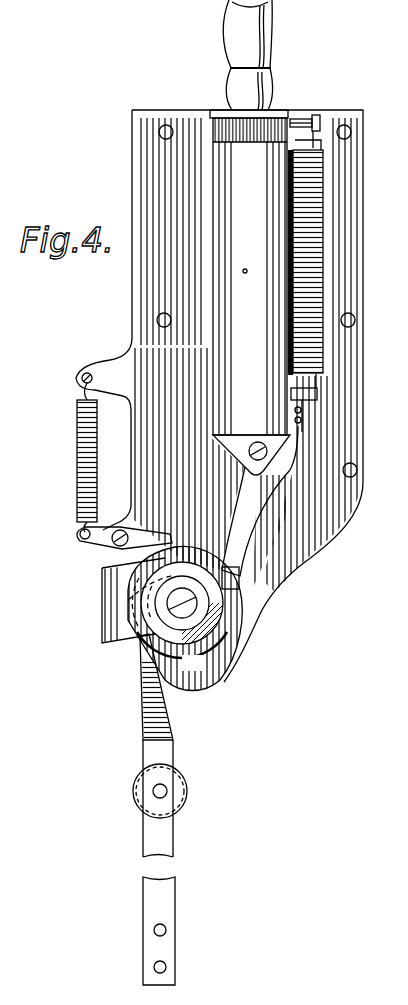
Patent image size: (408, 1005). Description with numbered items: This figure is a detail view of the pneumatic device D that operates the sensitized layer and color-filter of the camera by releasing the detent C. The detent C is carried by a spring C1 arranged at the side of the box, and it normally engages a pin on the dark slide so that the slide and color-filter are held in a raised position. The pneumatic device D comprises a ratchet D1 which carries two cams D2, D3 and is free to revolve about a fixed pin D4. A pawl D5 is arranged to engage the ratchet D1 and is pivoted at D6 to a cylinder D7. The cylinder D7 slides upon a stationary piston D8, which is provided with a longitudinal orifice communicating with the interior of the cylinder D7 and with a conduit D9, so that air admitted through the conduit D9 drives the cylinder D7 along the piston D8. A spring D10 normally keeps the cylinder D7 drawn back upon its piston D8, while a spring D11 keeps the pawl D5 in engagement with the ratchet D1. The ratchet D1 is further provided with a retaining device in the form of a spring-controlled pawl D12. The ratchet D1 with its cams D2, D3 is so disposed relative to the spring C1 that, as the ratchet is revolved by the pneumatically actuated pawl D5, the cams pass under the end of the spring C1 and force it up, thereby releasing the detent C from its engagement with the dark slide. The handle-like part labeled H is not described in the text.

The handle H is at (266, 48).
The pneumatic device D is at (219, 396).
The stationary piston D8 is at (238, 127).
The conduit D9 is at (248, 91).
The cylinder D7 is at (232, 211).
The spring D10 is at (312, 241).
The pivot D6 is at (252, 451).
The spring D11 is at (296, 449).
The spring-controlled pawl D12 is at (170, 535).
The pawl D5 is at (243, 507).
The cam D3 is at (160, 606).
The fixed pin D4 is at (152, 630).
The cam D2 is at (220, 620).
The ratchet D1 is at (223, 653).
The spring C1 is at (163, 697).
The detent C is at (164, 794).